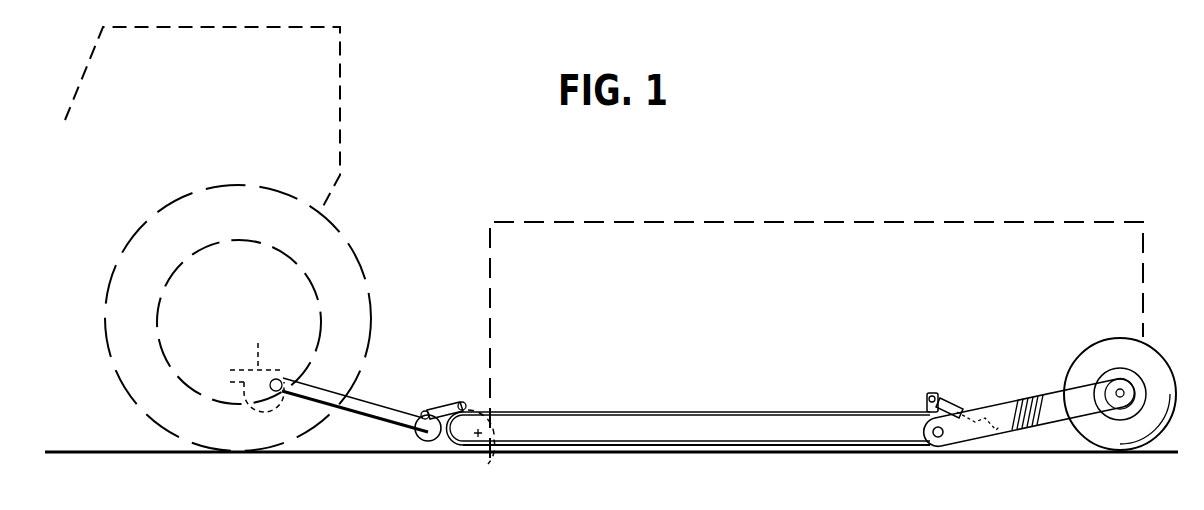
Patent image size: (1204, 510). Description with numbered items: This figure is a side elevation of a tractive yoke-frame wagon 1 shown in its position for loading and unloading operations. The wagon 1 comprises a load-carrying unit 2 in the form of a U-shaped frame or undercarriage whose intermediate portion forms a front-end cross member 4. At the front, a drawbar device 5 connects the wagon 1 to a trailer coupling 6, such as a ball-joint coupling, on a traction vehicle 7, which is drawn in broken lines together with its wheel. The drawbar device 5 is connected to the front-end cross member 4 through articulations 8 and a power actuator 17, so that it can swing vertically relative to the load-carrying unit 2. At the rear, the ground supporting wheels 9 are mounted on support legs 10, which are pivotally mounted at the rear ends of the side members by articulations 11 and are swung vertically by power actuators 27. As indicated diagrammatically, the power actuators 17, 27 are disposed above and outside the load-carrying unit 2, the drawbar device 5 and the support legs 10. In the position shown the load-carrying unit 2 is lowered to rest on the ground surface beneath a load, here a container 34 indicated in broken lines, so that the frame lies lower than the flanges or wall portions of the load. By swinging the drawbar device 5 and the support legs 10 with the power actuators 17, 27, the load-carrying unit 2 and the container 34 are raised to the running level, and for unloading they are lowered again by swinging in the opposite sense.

The yoke-frame wagon 1 is at (458, 358).
The load-carrying unit 2 is at (618, 403).
The front-end cross member 4 is at (494, 462).
The drawbar device 5 is at (363, 410).
The trailer coupling 6 is at (240, 372).
The traction vehicle 7 is at (336, 135).
The articulations 8 is at (438, 444).
The ground supporting wheels 9 is at (1125, 344).
The support legs 10 is at (1045, 397).
The articulations 11 is at (935, 458).
The power actuator 17 is at (428, 396).
The power actuator 27 is at (958, 389).
The container 34 is at (1034, 236).